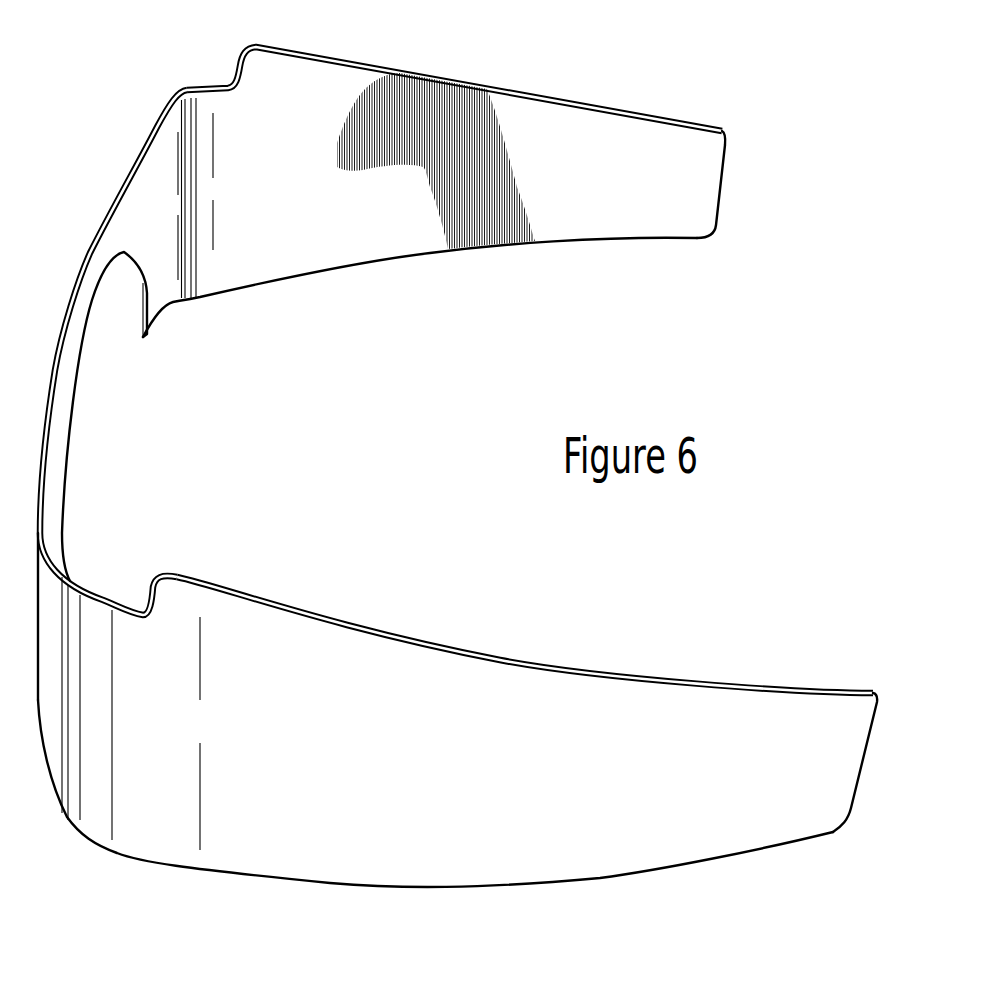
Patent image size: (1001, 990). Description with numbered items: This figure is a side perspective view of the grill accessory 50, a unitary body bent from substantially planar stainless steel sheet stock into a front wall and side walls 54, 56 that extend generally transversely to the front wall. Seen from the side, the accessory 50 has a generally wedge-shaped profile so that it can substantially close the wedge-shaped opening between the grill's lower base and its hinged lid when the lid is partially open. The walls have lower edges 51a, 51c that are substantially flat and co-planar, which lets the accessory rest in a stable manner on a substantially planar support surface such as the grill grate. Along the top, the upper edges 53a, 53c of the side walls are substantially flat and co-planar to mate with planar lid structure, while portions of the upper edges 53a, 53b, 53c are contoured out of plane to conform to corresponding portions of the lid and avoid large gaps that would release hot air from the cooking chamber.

The accessory 50 is at (630, 213).
The lower edge 51a is at (310, 282).
The lower edge 51c is at (185, 866).
The upper edge 53a is at (408, 64).
The upper edge 53b is at (117, 233).
The upper edge 53c is at (334, 622).
The side wall 54 is at (397, 197).
The side wall 56 is at (470, 698).